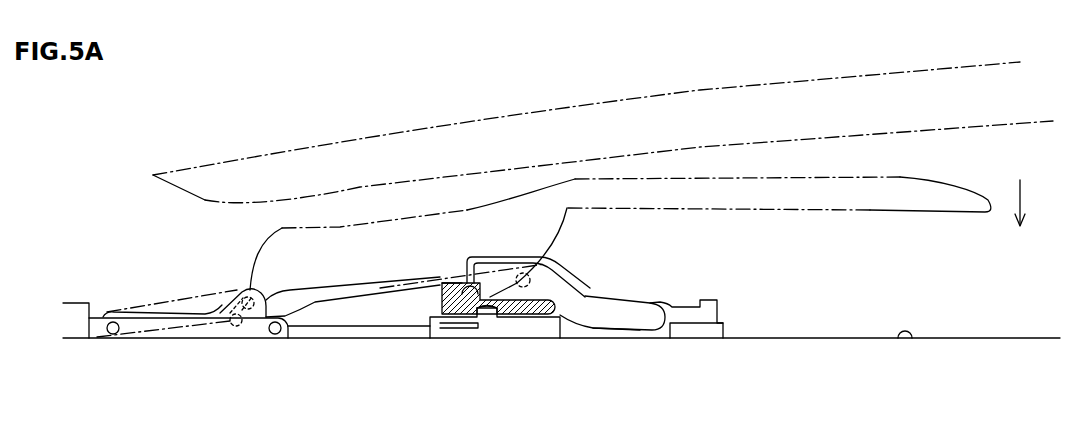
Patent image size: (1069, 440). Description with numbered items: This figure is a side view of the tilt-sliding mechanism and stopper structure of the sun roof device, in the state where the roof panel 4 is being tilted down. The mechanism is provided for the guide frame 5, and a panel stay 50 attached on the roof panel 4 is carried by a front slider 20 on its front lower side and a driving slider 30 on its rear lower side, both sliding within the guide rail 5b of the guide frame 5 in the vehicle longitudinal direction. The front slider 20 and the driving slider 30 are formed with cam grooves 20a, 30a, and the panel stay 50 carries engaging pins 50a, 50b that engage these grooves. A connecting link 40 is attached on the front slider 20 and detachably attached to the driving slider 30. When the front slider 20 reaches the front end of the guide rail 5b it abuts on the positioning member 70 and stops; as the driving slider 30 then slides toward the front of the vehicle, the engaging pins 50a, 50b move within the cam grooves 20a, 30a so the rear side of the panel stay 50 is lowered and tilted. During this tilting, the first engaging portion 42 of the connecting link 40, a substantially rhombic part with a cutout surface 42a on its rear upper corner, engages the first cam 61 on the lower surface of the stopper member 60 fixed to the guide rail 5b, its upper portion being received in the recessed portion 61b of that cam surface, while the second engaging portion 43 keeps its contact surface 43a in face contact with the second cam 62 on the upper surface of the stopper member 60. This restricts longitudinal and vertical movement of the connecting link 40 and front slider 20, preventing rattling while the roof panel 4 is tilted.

The roof panel 4 is at (273, 150).
The guide frame 5 is at (861, 336).
The guide rail 5b is at (912, 338).
The front slider 20 is at (190, 342).
The cam groove 20a is at (240, 333).
The driving slider 30 is at (635, 342).
The cam groove 30a is at (600, 316).
The connecting link 40 is at (342, 330).
The first engaging portion 42 is at (485, 320).
The cutout surface 42a is at (503, 313).
The second engaging portion 43 is at (467, 262).
The contact surface 43a is at (455, 284).
The panel stay 50 is at (949, 218).
The engaging pin 50a is at (227, 288).
The engaging pin 50b is at (550, 264).
The stopper member 60 is at (563, 304).
The first cam 61 is at (527, 312).
The recessed portion 61b is at (478, 323).
The second cam 62 is at (528, 280).
The positioning member 70 is at (80, 312).